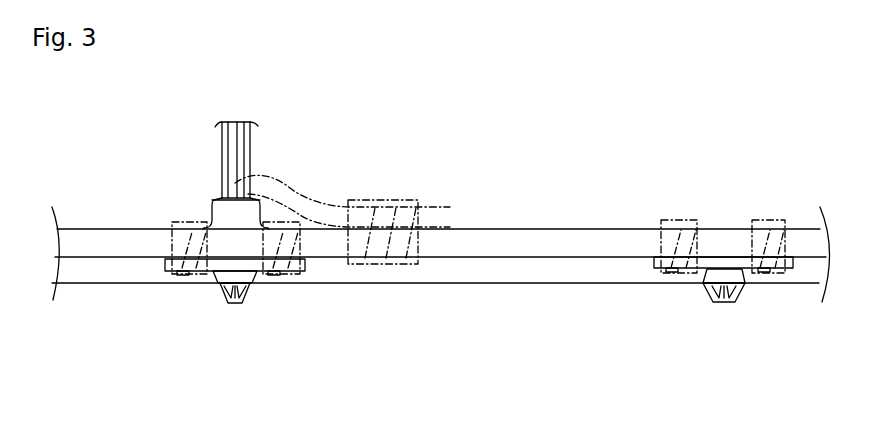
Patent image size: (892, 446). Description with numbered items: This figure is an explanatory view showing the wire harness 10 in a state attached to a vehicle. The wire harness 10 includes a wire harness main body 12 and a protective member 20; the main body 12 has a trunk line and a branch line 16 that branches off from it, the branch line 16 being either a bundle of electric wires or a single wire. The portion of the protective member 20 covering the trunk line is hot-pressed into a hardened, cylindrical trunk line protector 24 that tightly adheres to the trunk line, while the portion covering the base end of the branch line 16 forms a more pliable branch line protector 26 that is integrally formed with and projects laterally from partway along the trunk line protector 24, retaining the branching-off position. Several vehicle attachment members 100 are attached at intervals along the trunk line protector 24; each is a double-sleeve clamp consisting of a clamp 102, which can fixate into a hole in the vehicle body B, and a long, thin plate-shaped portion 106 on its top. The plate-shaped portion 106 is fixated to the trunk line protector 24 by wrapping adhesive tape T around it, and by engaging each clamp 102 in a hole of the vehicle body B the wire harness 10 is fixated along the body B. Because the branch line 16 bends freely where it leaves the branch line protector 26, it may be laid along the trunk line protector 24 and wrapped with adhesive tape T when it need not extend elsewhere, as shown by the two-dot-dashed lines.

The wire harness 10 is at (441, 211).
The wire harness main body 12 is at (218, 149).
The branch line 16 is at (246, 141).
The protective member 20 is at (122, 228).
The trunk line protector 24 is at (484, 228).
The branch line protector 26 is at (211, 205).
The vehicle attachment member 100 is at (479, 337).
The clamp 102 is at (479, 319).
The long, thin plate-shaped portion 106 is at (207, 276).
The adhesive tape T is at (395, 200).
The vehicle body B is at (583, 283).